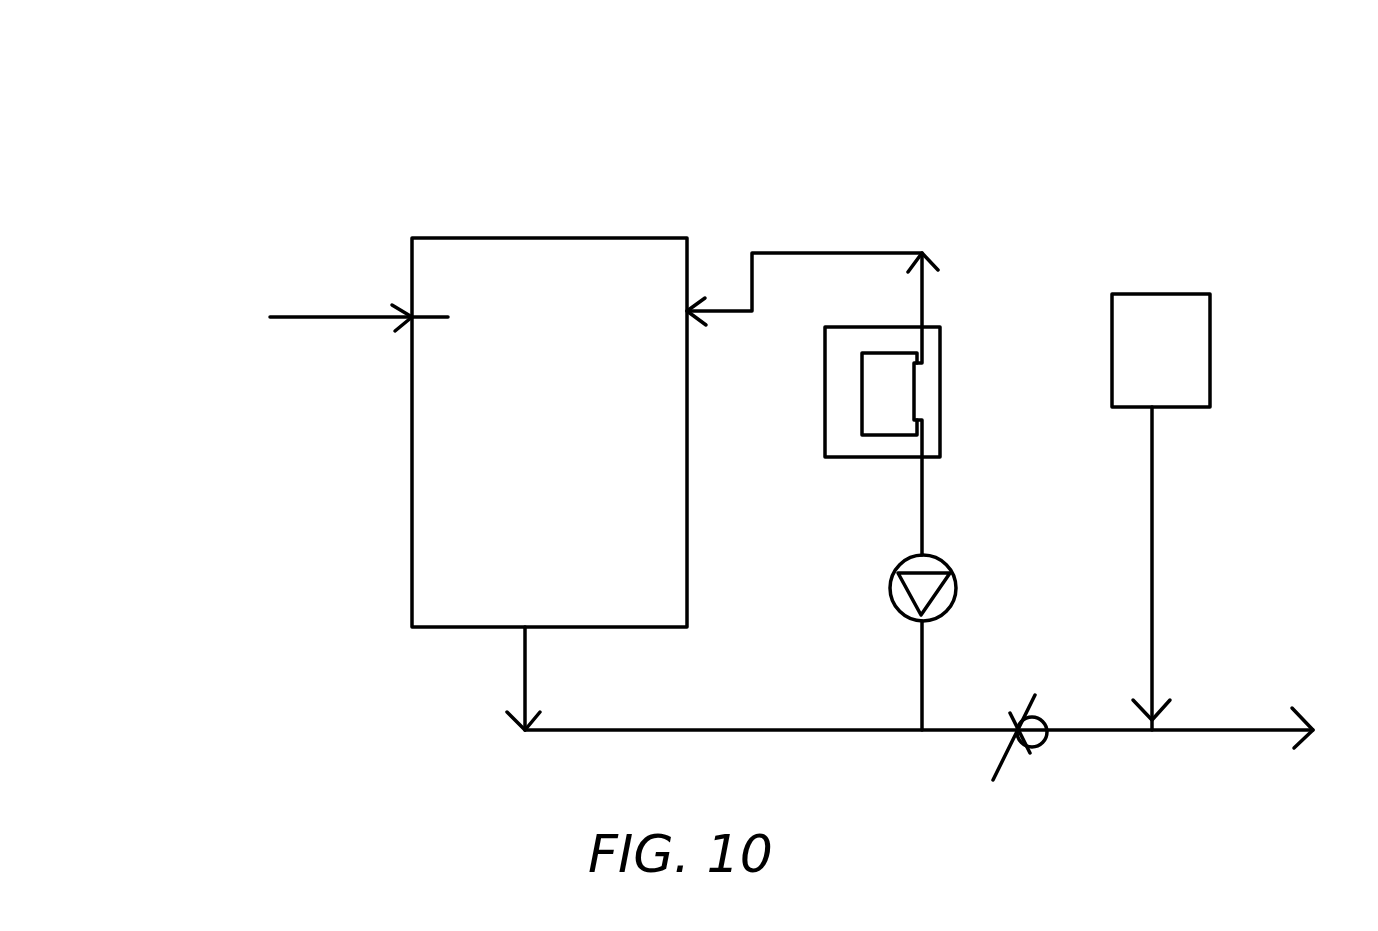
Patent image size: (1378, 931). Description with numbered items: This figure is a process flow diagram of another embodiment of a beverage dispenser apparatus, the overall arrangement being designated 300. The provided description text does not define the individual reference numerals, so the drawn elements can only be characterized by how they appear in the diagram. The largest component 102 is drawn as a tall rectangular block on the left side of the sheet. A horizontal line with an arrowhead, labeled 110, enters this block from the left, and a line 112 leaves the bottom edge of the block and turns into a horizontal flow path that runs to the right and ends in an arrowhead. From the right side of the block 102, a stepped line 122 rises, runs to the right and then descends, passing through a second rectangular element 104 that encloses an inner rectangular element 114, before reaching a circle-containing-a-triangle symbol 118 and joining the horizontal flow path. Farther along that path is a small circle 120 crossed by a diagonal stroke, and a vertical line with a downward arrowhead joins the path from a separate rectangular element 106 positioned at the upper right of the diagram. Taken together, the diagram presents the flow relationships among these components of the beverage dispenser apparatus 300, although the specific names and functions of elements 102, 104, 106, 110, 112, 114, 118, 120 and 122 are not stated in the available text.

The system 300 is at (343, 116).
The tank 102 is at (410, 531).
The inlet 110 is at (410, 326).
The outlet 112 is at (523, 628).
The recirculation line 122 is at (838, 240).
The heat exchanger 104 is at (856, 462).
The heating element 114 is at (900, 395).
The pump 118 is at (957, 607).
The valve 120 is at (1013, 761).
The supply source 106 is at (1212, 333).